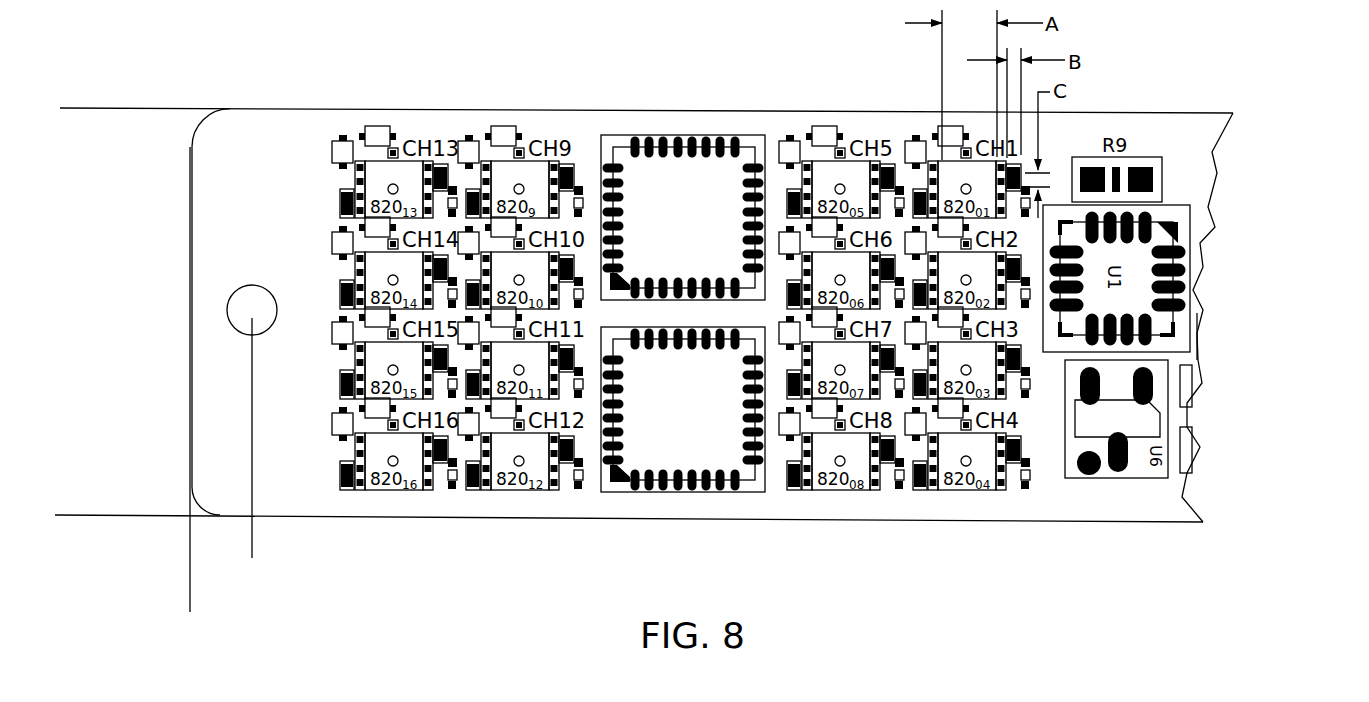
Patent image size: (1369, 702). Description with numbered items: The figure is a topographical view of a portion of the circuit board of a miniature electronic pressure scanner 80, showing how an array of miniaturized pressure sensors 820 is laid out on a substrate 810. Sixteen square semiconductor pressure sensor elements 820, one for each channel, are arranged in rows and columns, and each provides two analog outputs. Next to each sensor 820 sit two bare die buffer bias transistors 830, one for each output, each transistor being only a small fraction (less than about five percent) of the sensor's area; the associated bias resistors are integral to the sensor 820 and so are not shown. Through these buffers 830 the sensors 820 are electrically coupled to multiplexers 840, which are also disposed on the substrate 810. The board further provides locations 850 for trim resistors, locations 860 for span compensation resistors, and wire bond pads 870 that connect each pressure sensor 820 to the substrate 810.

The amplifier assembly 80 is at (1088, 501).
The substrate 810 is at (313, 515).
The pressure sensor 820 is at (822, 178).
The buffer bias transistor 830 is at (888, 167).
The multiplexer 840 is at (598, 318).
The locations for trim resistors 850 is at (372, 126).
The locations for span compensation resistors 860 is at (452, 492).
The wire bond pads 870 is at (421, 503).